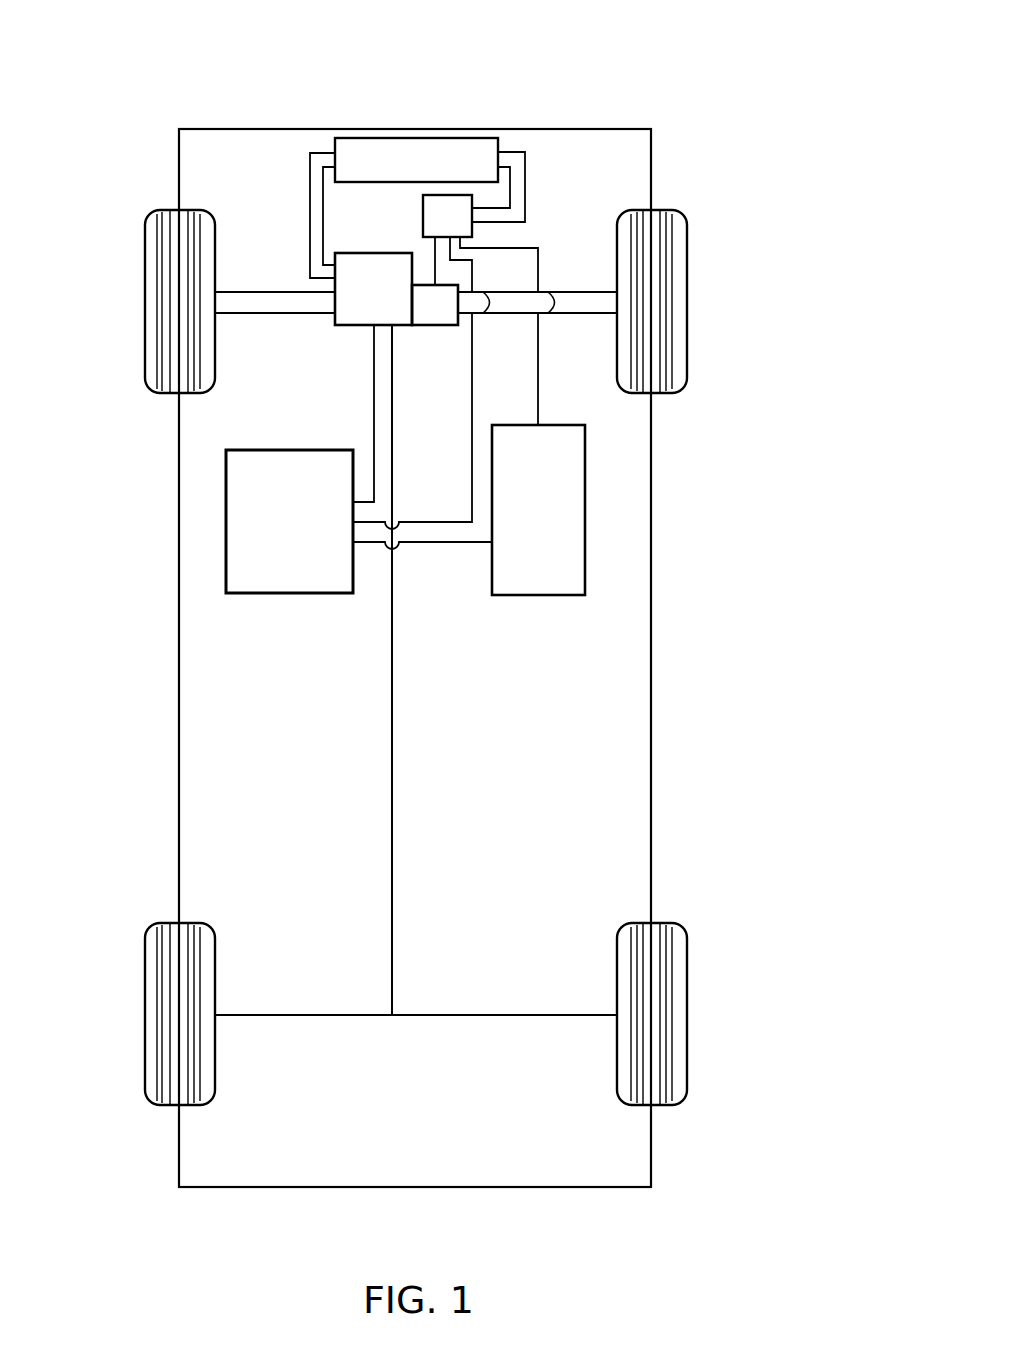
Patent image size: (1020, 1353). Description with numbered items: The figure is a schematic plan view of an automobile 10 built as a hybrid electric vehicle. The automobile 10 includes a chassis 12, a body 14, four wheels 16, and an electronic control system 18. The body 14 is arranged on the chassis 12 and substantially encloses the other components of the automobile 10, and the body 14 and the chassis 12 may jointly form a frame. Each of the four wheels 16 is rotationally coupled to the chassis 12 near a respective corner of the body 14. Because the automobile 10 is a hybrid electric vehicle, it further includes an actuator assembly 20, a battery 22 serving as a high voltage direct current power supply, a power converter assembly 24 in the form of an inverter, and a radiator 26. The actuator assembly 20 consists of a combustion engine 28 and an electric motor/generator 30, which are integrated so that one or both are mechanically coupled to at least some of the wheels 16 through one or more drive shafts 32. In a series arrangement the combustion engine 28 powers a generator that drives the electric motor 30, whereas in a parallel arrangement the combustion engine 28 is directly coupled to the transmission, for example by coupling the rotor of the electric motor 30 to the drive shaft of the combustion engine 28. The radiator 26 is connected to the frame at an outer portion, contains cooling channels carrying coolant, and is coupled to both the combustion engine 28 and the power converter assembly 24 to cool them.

The automobile 10 is at (439, 593).
The chassis 12 is at (392, 745).
The body 14 is at (179, 500).
The wheels 16 is at (145, 300).
The electronic control system 18 is at (308, 538).
The actuator assembly 20 is at (396, 349).
The battery 22 is at (556, 526).
The power converter assembly 24 is at (465, 233).
The radiator 26 is at (434, 177).
The combustion engine 28 is at (391, 303).
The electric motor/generator 30 is at (452, 321).
The drive shafts 32 is at (270, 292).